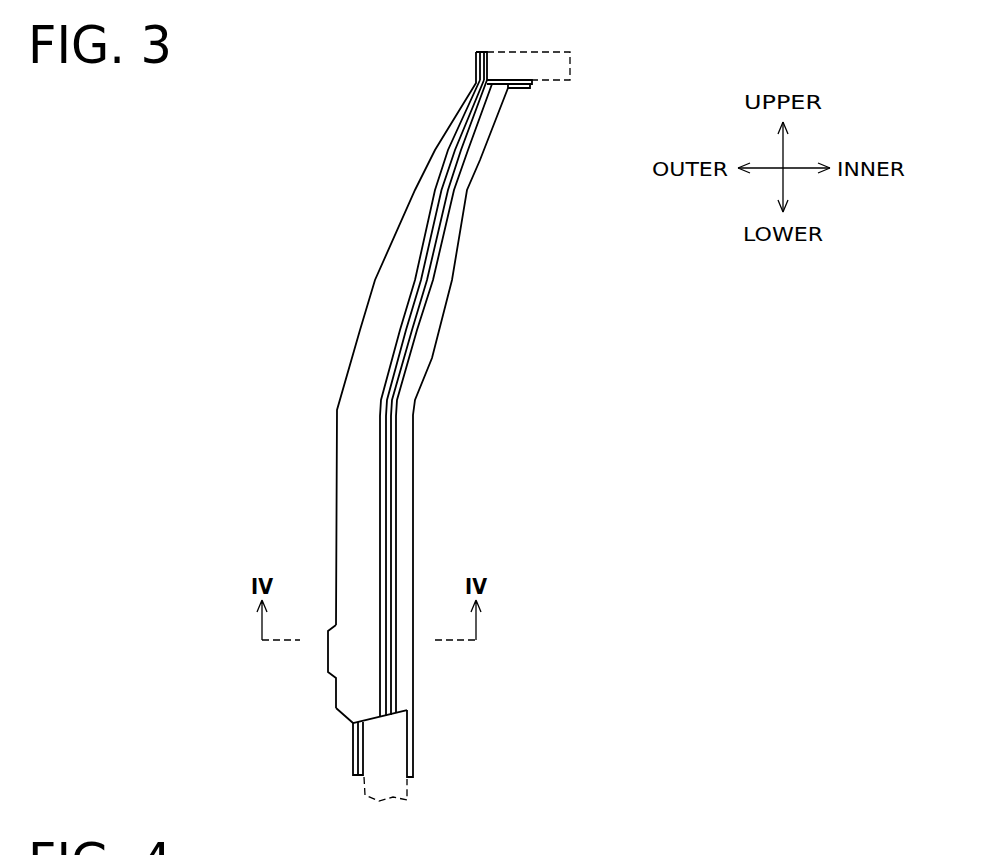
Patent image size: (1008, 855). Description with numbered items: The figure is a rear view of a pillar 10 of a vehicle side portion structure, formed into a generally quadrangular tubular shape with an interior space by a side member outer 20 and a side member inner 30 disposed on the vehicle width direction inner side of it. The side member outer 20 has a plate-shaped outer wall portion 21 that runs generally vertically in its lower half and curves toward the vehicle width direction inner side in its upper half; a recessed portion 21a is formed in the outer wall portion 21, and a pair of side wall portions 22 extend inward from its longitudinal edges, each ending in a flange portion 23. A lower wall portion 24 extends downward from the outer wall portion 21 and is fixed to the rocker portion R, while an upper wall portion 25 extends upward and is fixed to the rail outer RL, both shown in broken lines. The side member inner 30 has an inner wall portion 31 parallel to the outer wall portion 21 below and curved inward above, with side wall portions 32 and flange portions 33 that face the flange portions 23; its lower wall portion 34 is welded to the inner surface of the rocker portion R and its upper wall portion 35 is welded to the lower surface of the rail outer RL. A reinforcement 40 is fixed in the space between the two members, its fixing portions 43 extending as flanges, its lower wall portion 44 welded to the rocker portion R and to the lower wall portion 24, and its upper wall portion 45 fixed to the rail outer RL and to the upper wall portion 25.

The pillar 10 is at (268, 108).
The side member outer 20 is at (358, 228).
The outer wall portion 21 is at (363, 380).
The recessed portion 21a is at (328, 648).
The side wall portion 22 is at (353, 517).
The flange portion 23 is at (381, 404).
The lower wall portion 24 is at (353, 758).
The upper wall portion 25 is at (476, 62).
The side member inner 30 is at (502, 190).
The inner wall portion 31 is at (433, 359).
The side wall portion 32 is at (411, 465).
The flange portion 33 is at (397, 533).
The lower wall portion 34 is at (414, 738).
The upper wall portion 35 is at (519, 88).
The reinforcement 40 is at (401, 427).
The fixing portion 43 is at (383, 454).
The lower wall portion 44 is at (364, 754).
The upper wall portion 45 is at (476, 52).
The rail outer RL is at (537, 52).
The rocker portion R is at (407, 800).